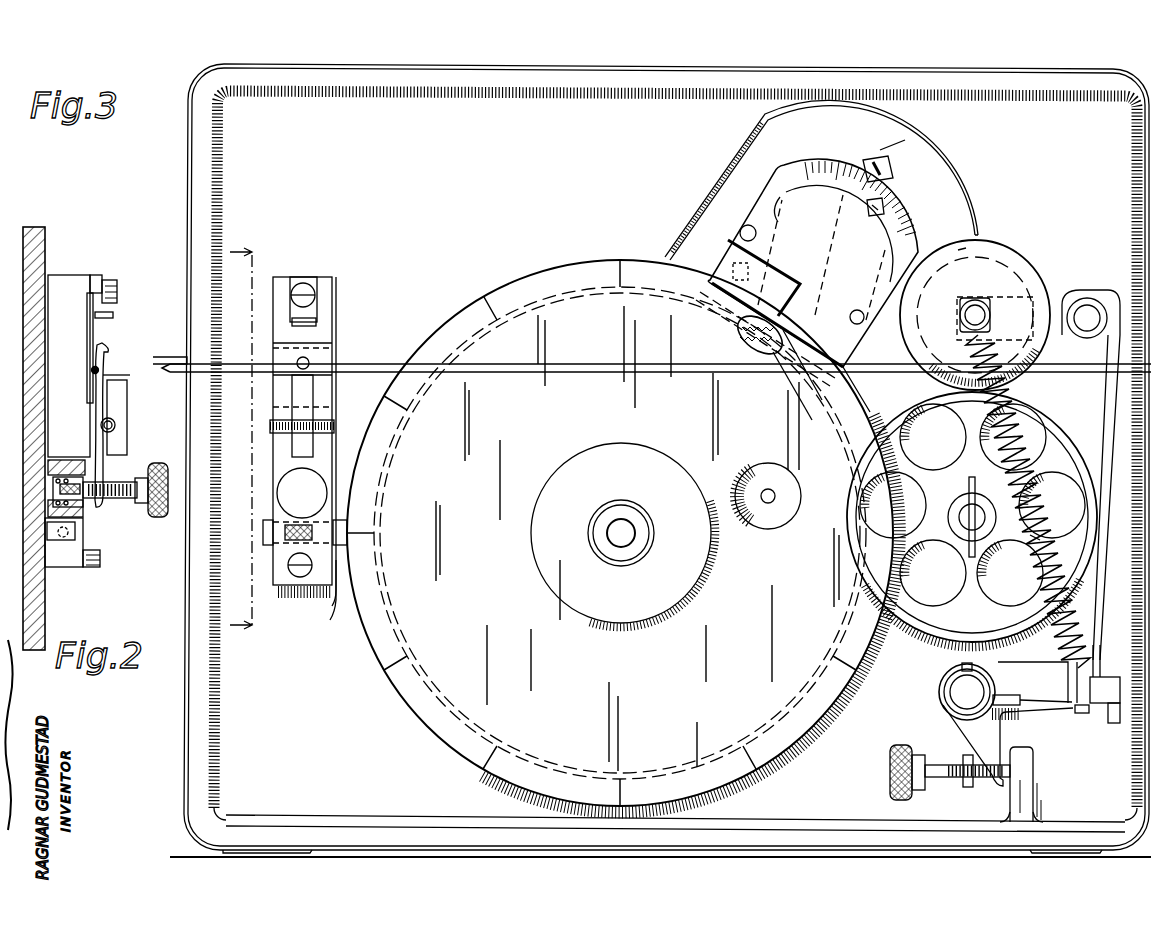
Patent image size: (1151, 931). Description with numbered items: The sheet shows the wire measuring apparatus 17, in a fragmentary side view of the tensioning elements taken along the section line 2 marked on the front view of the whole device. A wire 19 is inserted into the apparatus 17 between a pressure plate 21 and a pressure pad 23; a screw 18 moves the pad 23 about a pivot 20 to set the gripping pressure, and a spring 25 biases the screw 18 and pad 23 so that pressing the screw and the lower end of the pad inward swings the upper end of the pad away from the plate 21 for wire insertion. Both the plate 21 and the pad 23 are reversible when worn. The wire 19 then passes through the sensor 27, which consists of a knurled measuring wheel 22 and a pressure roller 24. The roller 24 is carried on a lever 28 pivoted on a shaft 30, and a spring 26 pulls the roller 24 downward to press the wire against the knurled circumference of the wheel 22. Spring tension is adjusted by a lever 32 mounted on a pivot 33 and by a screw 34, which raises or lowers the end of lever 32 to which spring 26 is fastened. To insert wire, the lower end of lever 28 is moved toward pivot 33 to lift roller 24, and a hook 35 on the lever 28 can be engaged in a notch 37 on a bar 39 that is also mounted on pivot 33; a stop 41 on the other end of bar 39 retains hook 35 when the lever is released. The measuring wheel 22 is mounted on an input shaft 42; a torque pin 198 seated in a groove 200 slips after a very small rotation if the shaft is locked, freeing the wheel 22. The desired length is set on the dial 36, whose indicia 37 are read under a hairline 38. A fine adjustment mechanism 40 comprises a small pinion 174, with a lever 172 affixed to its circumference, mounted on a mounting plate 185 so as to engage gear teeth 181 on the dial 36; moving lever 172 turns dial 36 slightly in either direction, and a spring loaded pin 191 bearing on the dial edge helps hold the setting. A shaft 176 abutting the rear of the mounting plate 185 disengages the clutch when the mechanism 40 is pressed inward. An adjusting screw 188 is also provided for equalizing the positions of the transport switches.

In FIG. 3, the measuring apparatus 17 is at (190, 160).
In FIG. 3, the section line 2- 2 is at (240, 438).
In FIG. 2, the screw 18 is at (120, 500).
In FIG. 3, the wire 19 is at (374, 364).
In FIG. 2, the wire 19 is at (92, 370).
In FIG. 3, the pivot 20 is at (270, 426).
In FIG. 2, the pivot 20 is at (116, 425).
In FIG. 3, the pressure plate 21 is at (333, 322).
In FIG. 2, the pressure plate 21 is at (90, 332).
In FIG. 3, the knurled measuring wheel 22 is at (1062, 432).
In FIG. 3, the pressure pad 23 is at (325, 358).
In FIG. 2, the pressure pad 23 is at (128, 401).
In FIG. 3, the pressure roller 24 is at (1020, 270).
In FIG. 2, the spring 25 is at (78, 508).
In FIG. 3, the spring 26 is at (992, 430).
In FIG. 3, the sensor 27 is at (1050, 392).
In FIG. 3, the lever 28 is at (1062, 296).
In FIG. 3, the shaft 30 is at (1092, 310).
In FIG. 3, the lever 32 is at (1000, 732).
In FIG. 3, the pivot 33 is at (962, 692).
In FIG. 3, the screw 34 is at (953, 783).
In FIG. 3, the hook 35 is at (1084, 714).
In FIG. 3, the dial 36 is at (528, 283).
In FIG. 3, the indicia 37 is at (487, 298).
In FIG. 3, the hairline 38 is at (792, 295).
In FIG. 3, the bar 39 is at (1108, 680).
In FIG. 3, the fine adjustment mechanism 40 is at (945, 207).
In FIG. 3, the stop 41 is at (1114, 723).
In FIG. 3, the input shaft 42 is at (962, 510).
In FIG. 3, the lever 172 is at (906, 182).
In FIG. 3, the pinion 174 is at (766, 352).
In FIG. 3, the shaft 176 is at (905, 216).
In FIG. 3, the gear teeth 181 is at (738, 336).
In FIG. 3, the mounting plate 185 is at (955, 228).
In FIG. 3, the adjusting screw 188 is at (770, 500).
In FIG. 3, the spring loaded pin 191 is at (336, 606).
In FIG. 3, the torque pin 198 is at (975, 482).
In FIG. 3, the groove 200 is at (1014, 524).